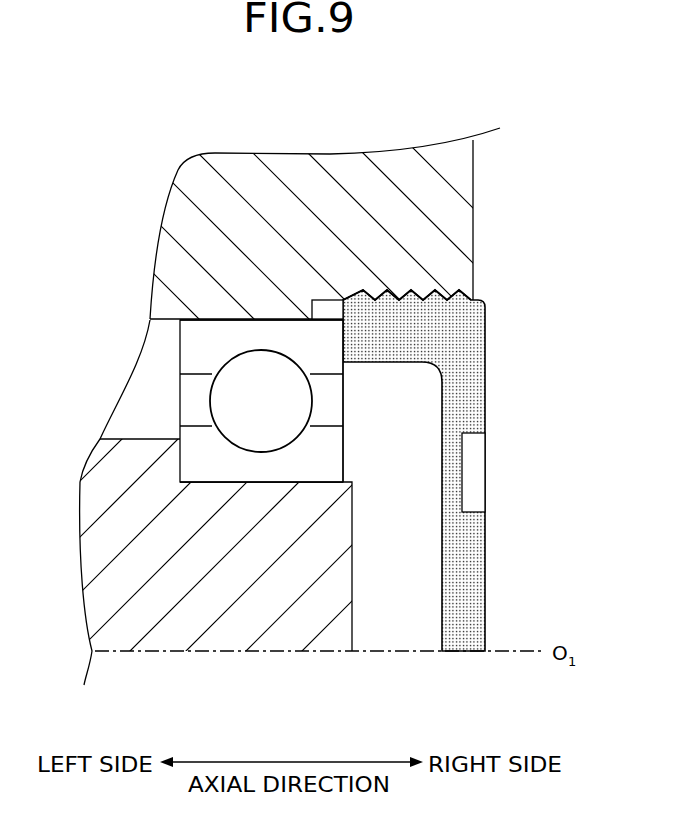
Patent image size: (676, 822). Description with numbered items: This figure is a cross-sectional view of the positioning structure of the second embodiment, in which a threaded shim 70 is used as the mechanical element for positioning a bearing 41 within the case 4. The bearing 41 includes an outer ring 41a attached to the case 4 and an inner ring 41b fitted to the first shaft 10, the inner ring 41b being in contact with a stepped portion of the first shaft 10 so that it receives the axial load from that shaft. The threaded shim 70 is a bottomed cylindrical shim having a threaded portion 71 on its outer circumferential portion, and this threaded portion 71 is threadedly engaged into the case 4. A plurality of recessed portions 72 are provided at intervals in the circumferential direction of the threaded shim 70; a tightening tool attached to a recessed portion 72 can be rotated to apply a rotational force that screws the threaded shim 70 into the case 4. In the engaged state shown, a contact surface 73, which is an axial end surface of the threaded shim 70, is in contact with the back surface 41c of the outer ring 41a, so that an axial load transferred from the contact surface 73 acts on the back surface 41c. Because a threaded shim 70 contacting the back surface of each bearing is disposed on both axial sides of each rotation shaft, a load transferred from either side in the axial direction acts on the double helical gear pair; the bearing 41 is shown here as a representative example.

The case 4 is at (402, 157).
The first shaft 10 is at (97, 563).
The bearing 41 is at (170, 343).
The outer ring 41a is at (257, 335).
The inner ring 41b is at (203, 435).
The back surface 41c is at (342, 362).
The threaded shim 70 is at (490, 355).
The threaded portion 71 is at (410, 289).
The recessed portion 72 is at (462, 469).
The contact surface 73 is at (337, 308).